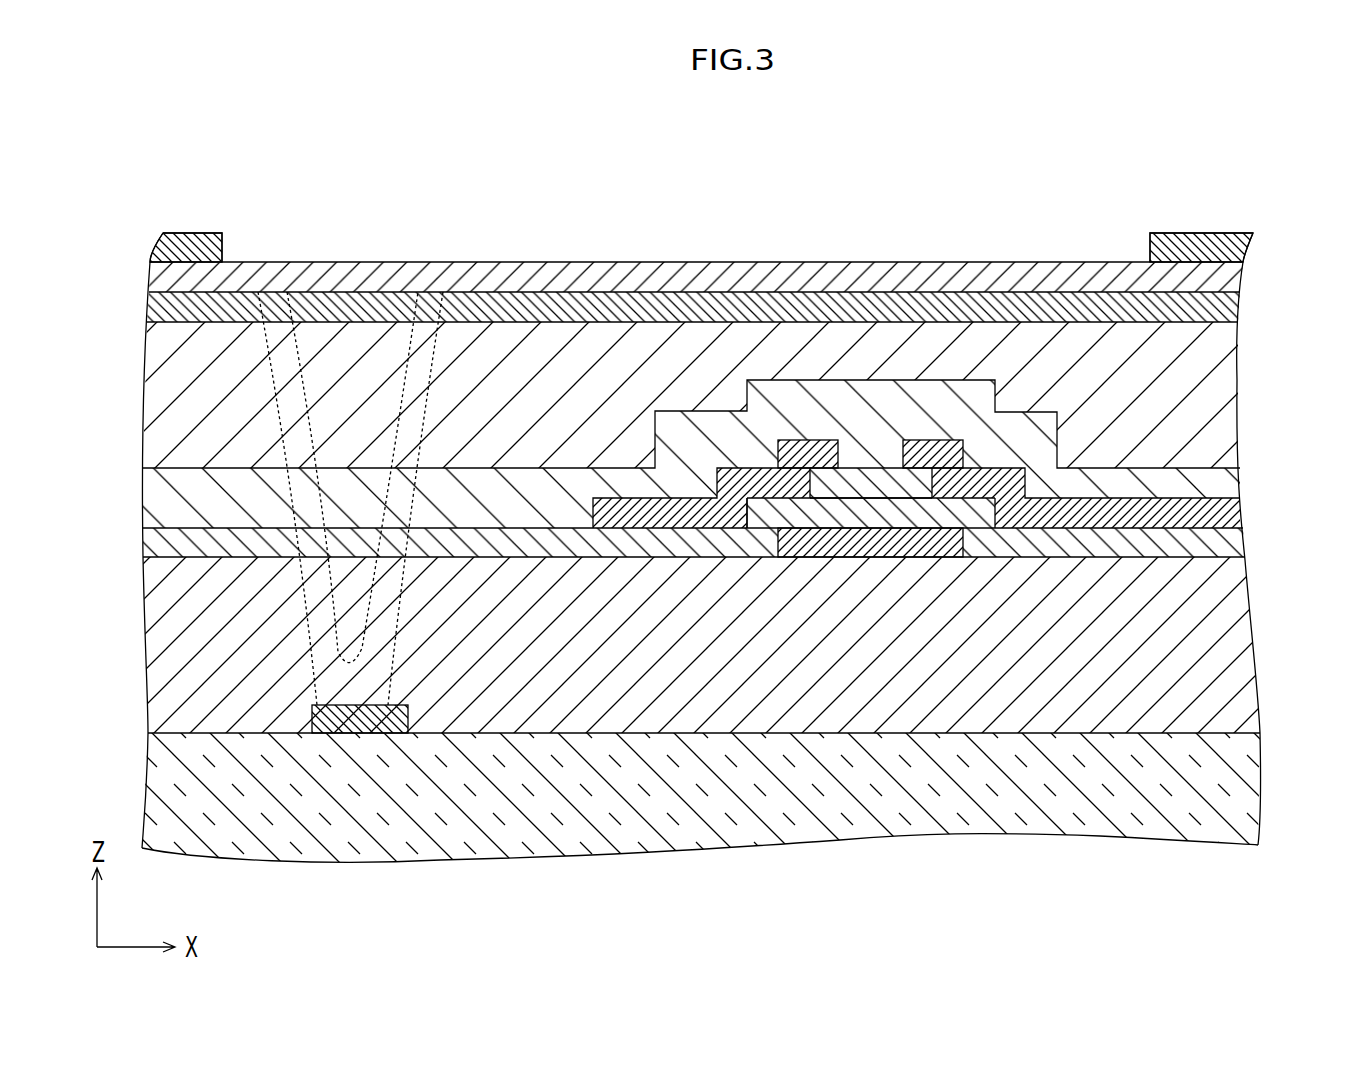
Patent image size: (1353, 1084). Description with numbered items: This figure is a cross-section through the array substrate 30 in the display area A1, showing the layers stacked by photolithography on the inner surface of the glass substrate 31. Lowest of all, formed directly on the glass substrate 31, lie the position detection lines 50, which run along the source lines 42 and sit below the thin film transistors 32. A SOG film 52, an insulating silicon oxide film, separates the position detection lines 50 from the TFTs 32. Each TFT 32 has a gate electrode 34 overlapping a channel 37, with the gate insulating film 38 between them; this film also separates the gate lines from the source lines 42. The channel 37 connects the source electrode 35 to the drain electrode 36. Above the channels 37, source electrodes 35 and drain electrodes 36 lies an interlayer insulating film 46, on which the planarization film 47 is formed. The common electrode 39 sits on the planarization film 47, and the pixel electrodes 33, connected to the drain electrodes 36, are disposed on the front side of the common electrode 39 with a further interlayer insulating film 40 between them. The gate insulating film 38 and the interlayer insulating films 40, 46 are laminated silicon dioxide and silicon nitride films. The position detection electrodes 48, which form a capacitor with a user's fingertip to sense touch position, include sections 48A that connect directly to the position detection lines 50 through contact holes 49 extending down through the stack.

The array substrate 30 is at (1219, 220).
The glass substrate 31 is at (235, 823).
The thin film transistor 32 is at (822, 568).
The pixel electrode 33 is at (183, 232).
The gate electrode 34 is at (888, 545).
The source electrode 35 is at (820, 441).
The drain electrode 36 is at (913, 441).
The channel 37 is at (866, 480).
The gate insulating film 38 is at (1236, 542).
The common electrode 39 is at (693, 253).
The interlayer insulating film 40 is at (312, 270).
The source line 42 is at (619, 498).
The interlayer insulating film 46 is at (1236, 486).
The planarization film 47 is at (1228, 413).
The position detection electrode 48 is at (498, 308).
The section of position detection electrode 48A is at (308, 582).
The contact hole 49 is at (290, 447).
The position detection line 50 is at (378, 717).
The SOG film 52 is at (1238, 646).
The display area A1 is at (1070, 225).